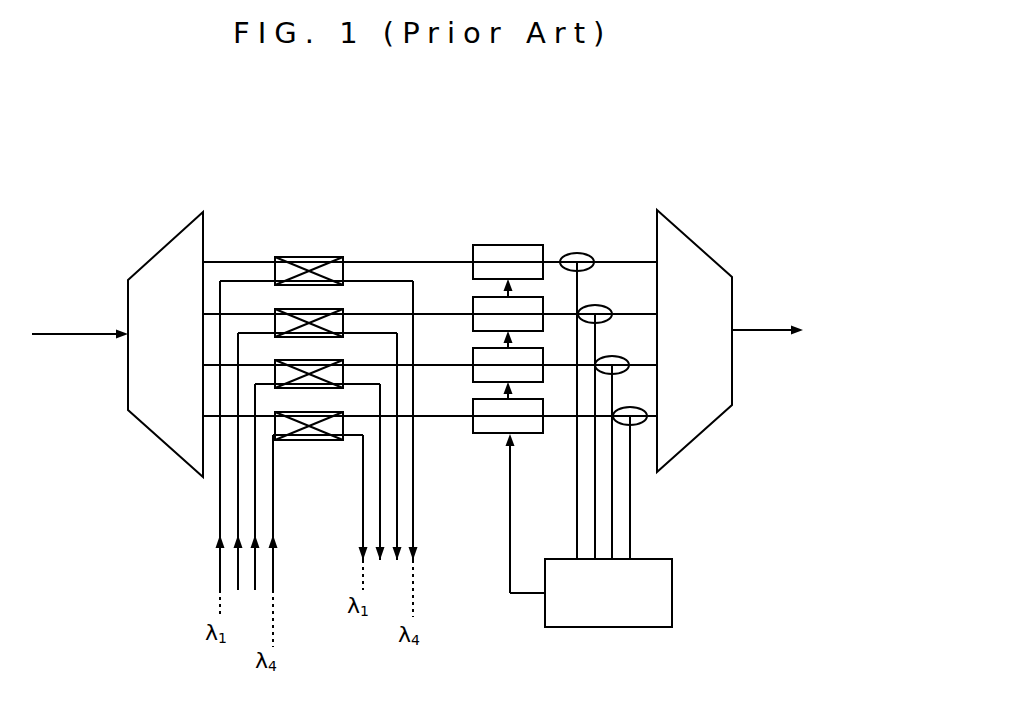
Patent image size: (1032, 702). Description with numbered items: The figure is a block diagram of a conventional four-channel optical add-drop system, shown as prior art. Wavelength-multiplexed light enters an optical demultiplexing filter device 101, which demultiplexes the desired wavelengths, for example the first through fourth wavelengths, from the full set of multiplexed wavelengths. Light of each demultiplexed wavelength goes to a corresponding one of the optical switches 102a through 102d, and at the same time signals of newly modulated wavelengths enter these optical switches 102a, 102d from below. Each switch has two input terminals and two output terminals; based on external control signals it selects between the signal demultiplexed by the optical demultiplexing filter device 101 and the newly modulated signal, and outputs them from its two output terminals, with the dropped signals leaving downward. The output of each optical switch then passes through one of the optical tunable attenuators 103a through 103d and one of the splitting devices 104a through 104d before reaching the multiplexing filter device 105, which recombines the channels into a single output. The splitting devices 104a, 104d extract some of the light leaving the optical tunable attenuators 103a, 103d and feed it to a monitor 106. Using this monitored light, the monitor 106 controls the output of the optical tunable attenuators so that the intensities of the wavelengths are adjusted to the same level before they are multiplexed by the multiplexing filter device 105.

The optical demultiplexing filter device 101 is at (175, 238).
The optical switch 102a is at (298, 257).
The optical switch 102d is at (315, 443).
The optical tunable attenuator 103a is at (495, 243).
The optical tunable attenuator 103d is at (490, 438).
The splitting device 104a is at (578, 250).
The splitting device 104d is at (637, 425).
The multiplexing filter device 105 is at (695, 242).
The monitor 106 is at (674, 579).